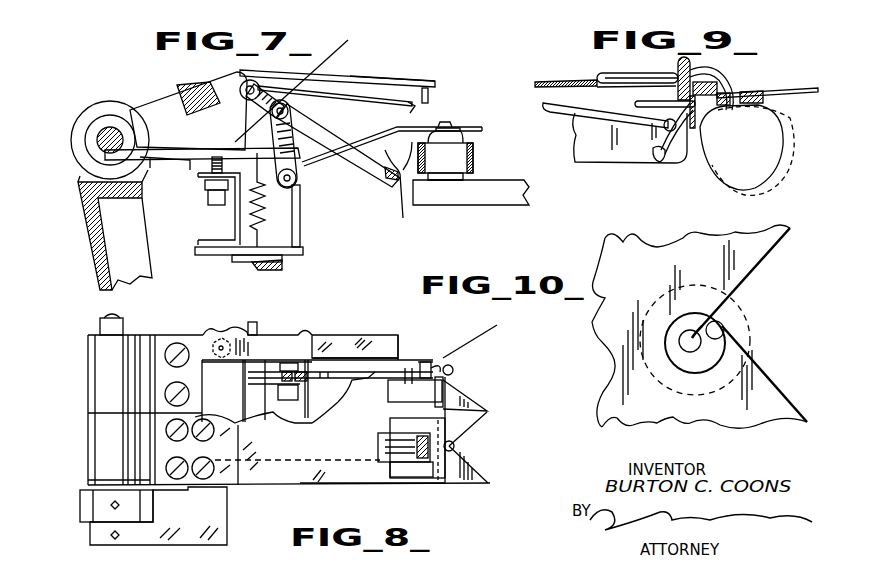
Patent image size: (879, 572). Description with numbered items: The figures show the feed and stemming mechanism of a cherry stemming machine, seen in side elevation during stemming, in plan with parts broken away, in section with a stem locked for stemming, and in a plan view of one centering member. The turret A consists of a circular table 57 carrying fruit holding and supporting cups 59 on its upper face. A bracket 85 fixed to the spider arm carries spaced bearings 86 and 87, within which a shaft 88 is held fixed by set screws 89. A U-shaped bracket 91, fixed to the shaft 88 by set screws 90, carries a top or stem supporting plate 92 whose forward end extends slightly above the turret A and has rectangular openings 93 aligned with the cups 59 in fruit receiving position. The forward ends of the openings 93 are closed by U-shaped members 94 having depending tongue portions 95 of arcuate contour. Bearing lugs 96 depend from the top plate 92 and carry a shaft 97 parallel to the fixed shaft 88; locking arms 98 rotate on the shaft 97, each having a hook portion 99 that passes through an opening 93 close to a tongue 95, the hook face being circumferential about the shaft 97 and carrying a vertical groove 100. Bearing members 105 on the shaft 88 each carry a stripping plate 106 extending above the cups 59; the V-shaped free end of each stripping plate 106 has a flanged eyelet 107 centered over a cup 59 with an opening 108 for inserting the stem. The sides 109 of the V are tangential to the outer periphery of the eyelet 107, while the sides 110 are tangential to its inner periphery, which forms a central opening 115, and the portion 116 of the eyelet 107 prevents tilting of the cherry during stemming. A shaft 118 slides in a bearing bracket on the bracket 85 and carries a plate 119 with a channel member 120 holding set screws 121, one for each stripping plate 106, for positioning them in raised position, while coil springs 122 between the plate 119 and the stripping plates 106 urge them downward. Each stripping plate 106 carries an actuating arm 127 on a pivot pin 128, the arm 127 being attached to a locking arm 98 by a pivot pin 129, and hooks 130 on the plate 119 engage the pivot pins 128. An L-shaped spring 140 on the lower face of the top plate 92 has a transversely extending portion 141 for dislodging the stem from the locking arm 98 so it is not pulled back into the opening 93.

In FIG. 7, the circular table 57 is at (453, 198).
In FIG. 7, the fruit holding and supporting cups 59 is at (474, 158).
In FIG. 7, the turret A is at (478, 196).
In FIG. 7, the bracket 85 is at (90, 240).
In FIG. 8, the bearing 86 is at (87, 505).
In FIG. 7, the bearing 87 is at (84, 114).
In FIG. 7, the shaft 88 is at (100, 128).
In FIG. 8, the shaft 88 is at (121, 319).
In FIG. 8, the set screws 89 is at (113, 507).
In FIG. 8, the set screws 90 is at (118, 537).
In FIG. 7, the U-shaped bracket 91 is at (153, 107).
In FIG. 8, the U-shaped bracket 91 is at (213, 517).
In FIG. 7, the top or stem supporting plate 92 is at (322, 78).
In FIG. 9, the top or stem supporting plate 92 is at (550, 82).
In FIG. 8, the top or stem supporting plate 92 is at (345, 477).
In FIG. 9, the rectangular openings 93 is at (603, 82).
In FIG. 8, the rectangular openings 93 is at (393, 481).
In FIG. 7, the U-shaped members 94 is at (415, 82).
In FIG. 9, the U-shaped members 94 is at (622, 76).
In FIG. 8, the U-shaped members 94 is at (443, 385).
In FIG. 7, the depending tongue portions 95 is at (430, 94).
In FIG. 9, the depending tongue portions 95 is at (695, 112).
In FIG. 7, the bearing lugs 96 is at (247, 78).
In FIG. 7, the shaft 97 is at (253, 103).
In FIG. 8, the shaft 97 is at (254, 322).
In FIG. 7, the locking arms 98 is at (367, 163).
In FIG. 9, the locking arms 98 is at (643, 160).
In FIG. 8, the locking arms 98 is at (352, 378).
In FIG. 7, the hook portion 99 is at (415, 145).
In FIG. 9, the hook portion 99 is at (680, 68).
In FIG. 8, the hook portion 99 is at (420, 362).
In FIG. 9, the groove 100 is at (693, 68).
In FIG. 8, the groove 100 is at (437, 366).
In FIG. 7, the bearing members 105 is at (172, 162).
In FIG. 8, the bearing members 105 is at (145, 343).
In FIG. 7, the stripping plate 106 is at (230, 150).
In FIG. 9, the stripping plate 106 is at (636, 104).
In FIG. 10, the stripping plate 106 is at (657, 248).
In FIG. 8, the stripping plate 106 is at (303, 336).
In FIG. 7, the flanged eyelets 107 is at (450, 126).
In FIG. 9, the flanged eyelets 107 is at (749, 93).
In FIG. 10, the flanged eyelets 107 is at (712, 333).
In FIG. 8, the flanged eyelets 107 is at (453, 371).
In FIG. 10, the opening 108 is at (703, 318).
In FIG. 10, the sides 109 is at (757, 367).
In FIG. 8, the sides 109 is at (447, 362).
In FIG. 10, the sides 110 is at (772, 252).
In FIG. 8, the sides 110 is at (470, 395).
In FIG. 10, the central opening 115 is at (690, 343).
In FIG. 10, the portion of eyelet 116 is at (720, 342).
In FIG. 7, the shaft 118 is at (284, 265).
In FIG. 7, the plate 119 is at (304, 251).
In FIG. 7, the channel member 120 is at (238, 218).
In FIG. 7, the set screws 121 is at (210, 198).
In FIG. 7, the coil springs 122 is at (270, 212).
In FIG. 7, the actuating arm 127 is at (298, 118).
In FIG. 8, the actuating arm 127 is at (290, 422).
In FIG. 7, the pivot pin 128 is at (298, 184).
In FIG. 7, the pivot pins 129 is at (308, 84).
In FIG. 7, the vertically extending hooks 130 is at (302, 233).
In FIG. 8, the vertically extending hooks 130 is at (330, 338).
In FIG. 7, the L-shaped spring 140 is at (337, 92).
In FIG. 9, the L-shaped spring 140 is at (565, 112).
In FIG. 8, the L-shaped spring 140 is at (395, 455).
In FIG. 7, the transversely extending portion 141 is at (410, 106).
In FIG. 9, the transversely extending portion 141 is at (692, 150).